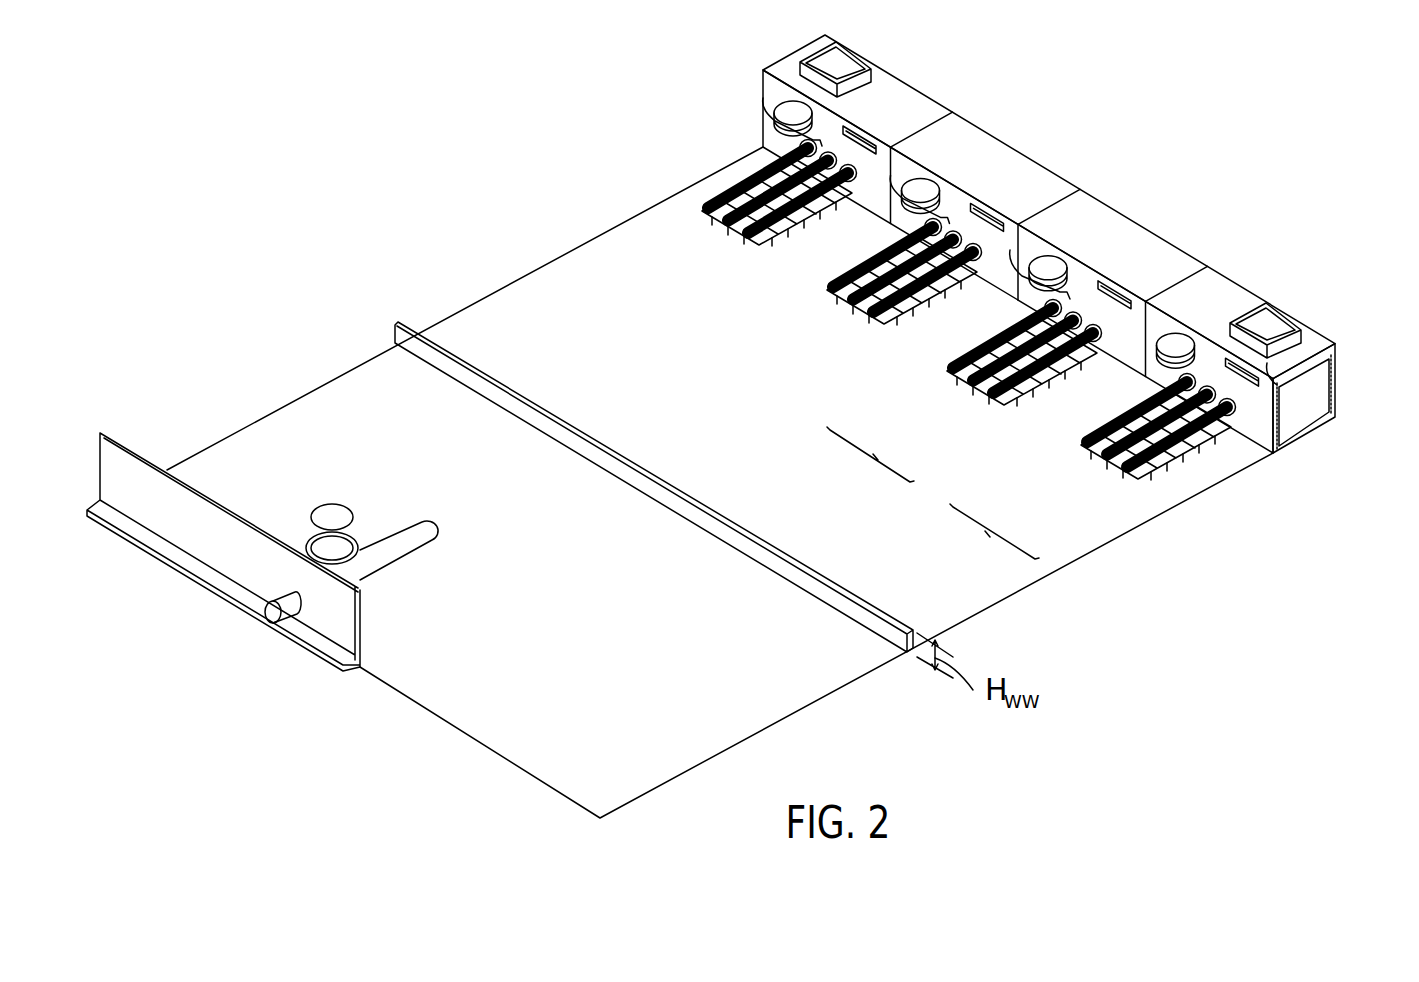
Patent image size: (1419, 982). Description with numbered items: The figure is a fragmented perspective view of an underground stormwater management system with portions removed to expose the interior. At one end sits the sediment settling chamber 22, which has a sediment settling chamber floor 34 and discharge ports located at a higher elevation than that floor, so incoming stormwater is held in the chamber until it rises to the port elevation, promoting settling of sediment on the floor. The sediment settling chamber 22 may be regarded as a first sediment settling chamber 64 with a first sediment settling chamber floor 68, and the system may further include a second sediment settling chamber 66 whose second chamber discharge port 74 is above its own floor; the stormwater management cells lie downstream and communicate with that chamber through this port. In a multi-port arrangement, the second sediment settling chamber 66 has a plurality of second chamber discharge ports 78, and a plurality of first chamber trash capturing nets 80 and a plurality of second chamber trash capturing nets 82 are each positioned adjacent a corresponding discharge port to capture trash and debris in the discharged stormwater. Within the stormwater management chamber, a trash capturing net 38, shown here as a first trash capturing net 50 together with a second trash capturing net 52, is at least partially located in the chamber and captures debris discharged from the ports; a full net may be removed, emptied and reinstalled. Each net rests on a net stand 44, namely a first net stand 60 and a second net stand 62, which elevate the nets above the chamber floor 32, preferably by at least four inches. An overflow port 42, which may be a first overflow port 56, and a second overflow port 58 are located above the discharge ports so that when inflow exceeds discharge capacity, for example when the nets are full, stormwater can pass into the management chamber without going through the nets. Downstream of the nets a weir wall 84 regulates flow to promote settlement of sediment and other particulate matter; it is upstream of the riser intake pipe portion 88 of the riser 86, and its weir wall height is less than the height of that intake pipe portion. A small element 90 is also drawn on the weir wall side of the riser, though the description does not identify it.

The sediment settling chamber 22 is at (1338, 352).
The chamber floor 32 is at (613, 253).
The sediment settling chamber floor 34 is at (1285, 433).
The trash capturing net 38 is at (1177, 450).
The overflow port 42 is at (1243, 362).
The net stand 44 is at (1140, 467).
The first trash capturing net 50 is at (1217, 430).
The second trash capturing net 52 is at (1125, 457).
The first overflow port 56 is at (1280, 313).
The second overflow port 58 is at (1165, 330).
The first net stand 60 is at (1087, 443).
The second net stand 62 is at (948, 368).
The first sediment settling chamber 64 is at (1338, 402).
The second sediment settling chamber 66 is at (1132, 240).
The first sediment settling chamber floor 68 is at (1318, 415).
The second chamber discharge port 74 is at (1133, 298).
The plurality of second chamber discharge ports 78 is at (1060, 292).
The plurality of first chamber trash capturing nets 80 is at (994, 541).
The plurality of second chamber trash capturing nets 82 is at (870, 465).
The weir wall 84 is at (832, 600).
The riser 86 is at (310, 537).
The riser intake pipe portion 88 is at (427, 527).
The pin 90 is at (272, 615).